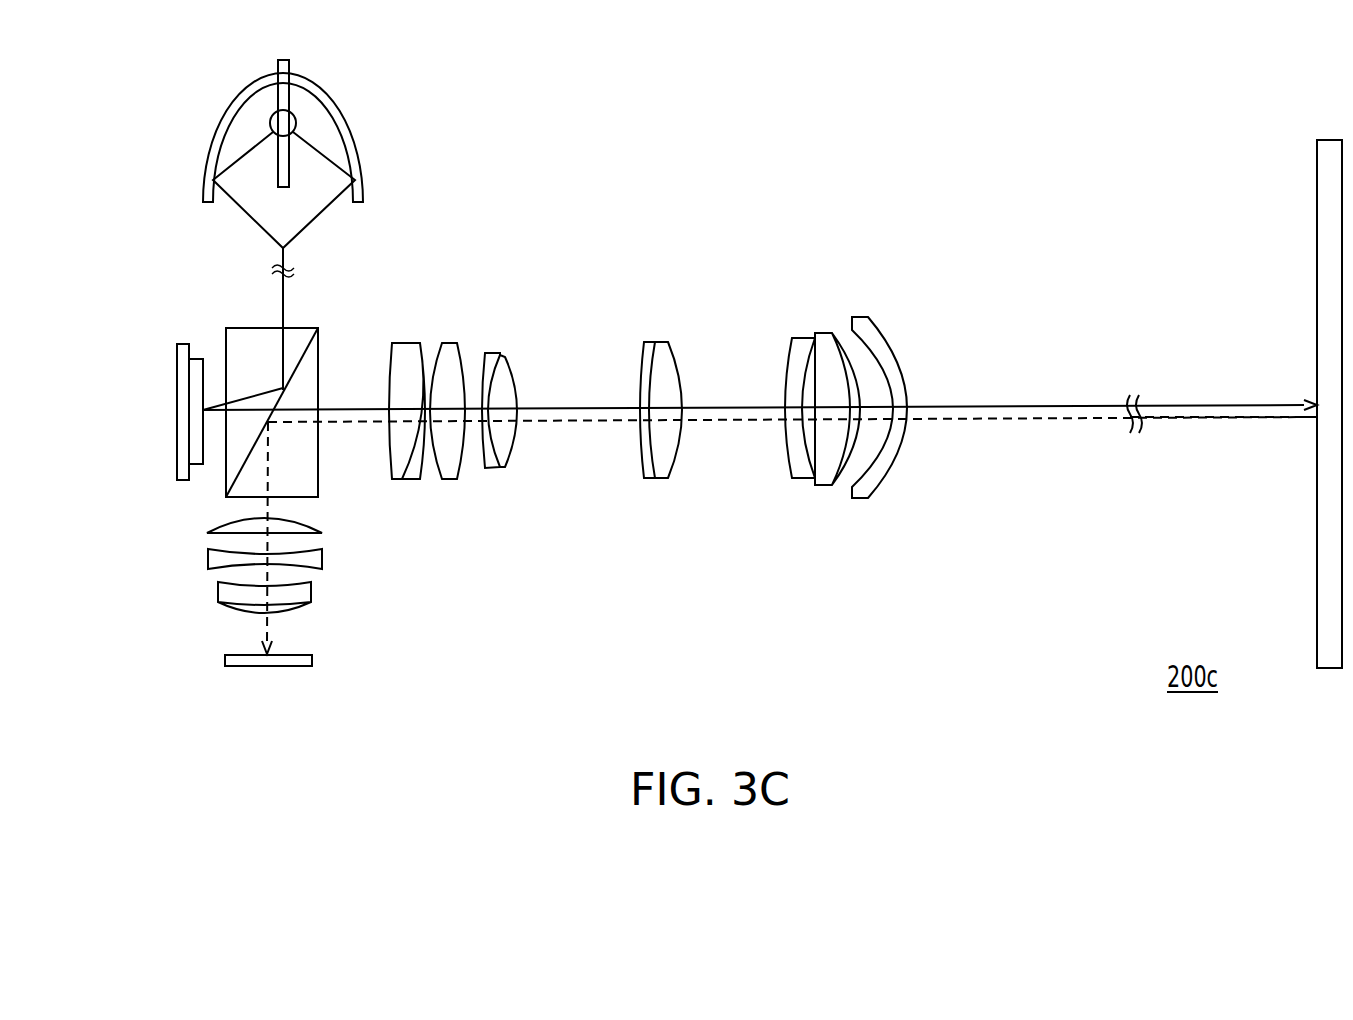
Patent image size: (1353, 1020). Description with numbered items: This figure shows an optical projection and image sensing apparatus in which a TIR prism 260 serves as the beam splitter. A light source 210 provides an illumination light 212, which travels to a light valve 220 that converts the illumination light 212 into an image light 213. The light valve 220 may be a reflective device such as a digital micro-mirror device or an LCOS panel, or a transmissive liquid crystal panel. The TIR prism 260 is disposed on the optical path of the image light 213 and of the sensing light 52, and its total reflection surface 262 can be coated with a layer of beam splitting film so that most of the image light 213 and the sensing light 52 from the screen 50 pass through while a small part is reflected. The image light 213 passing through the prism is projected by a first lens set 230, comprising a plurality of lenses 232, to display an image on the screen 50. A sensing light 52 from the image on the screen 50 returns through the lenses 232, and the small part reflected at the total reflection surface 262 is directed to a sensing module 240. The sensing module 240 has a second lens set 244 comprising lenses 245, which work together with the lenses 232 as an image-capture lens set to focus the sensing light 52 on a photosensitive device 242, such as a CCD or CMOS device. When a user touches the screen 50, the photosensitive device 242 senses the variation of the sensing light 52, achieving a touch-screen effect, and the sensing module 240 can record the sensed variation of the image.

The light source 210 is at (212, 153).
The illumination light 212 is at (283, 300).
The TIR prism 260 is at (237, 349).
The total reflection surface 262 is at (302, 343).
The light valve 220 is at (185, 408).
The image light 213 is at (218, 420).
The first lens set 230 is at (910, 324).
The lenses 232 is at (862, 328).
The sensing module 240 is at (118, 560).
The second lens set 244 is at (182, 518).
The lenses 245 is at (310, 560).
The photosensitive device 242 is at (228, 660).
The screen 50 is at (1326, 668).
The sensing light 52 is at (1213, 420).